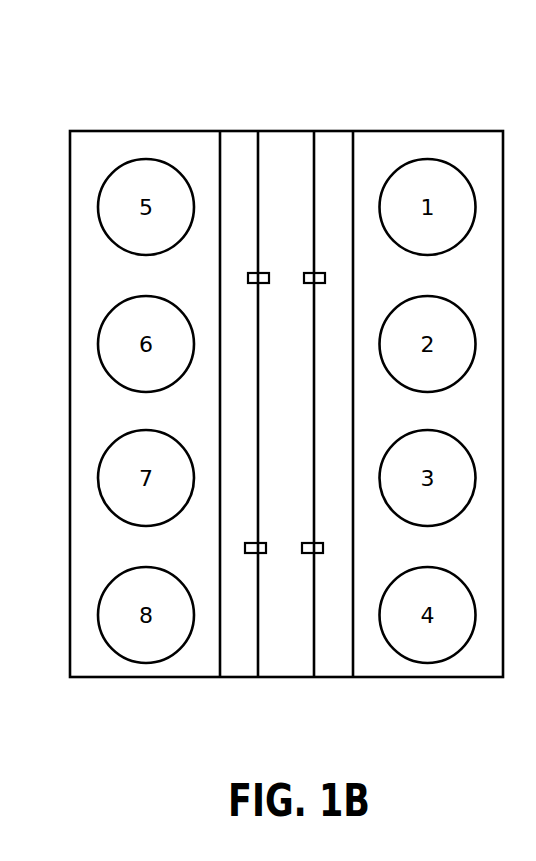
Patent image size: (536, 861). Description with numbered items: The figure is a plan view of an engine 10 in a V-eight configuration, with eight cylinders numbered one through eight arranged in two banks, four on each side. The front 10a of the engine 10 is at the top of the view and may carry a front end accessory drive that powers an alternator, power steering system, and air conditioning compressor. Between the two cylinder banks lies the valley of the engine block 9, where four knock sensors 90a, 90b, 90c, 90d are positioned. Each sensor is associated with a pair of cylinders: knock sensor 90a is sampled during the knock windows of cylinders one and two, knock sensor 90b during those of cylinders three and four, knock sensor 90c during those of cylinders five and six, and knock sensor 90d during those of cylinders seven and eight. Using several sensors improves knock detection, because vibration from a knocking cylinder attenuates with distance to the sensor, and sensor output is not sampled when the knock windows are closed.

The engine 10 is at (108, 131).
The front of engine 10a is at (283, 92).
The engine block 9 is at (152, 716).
The knock sensor 90a is at (322, 278).
The knock sensor 90b is at (320, 548).
The knock sensor 90c is at (260, 276).
The knock sensor 90d is at (258, 546).